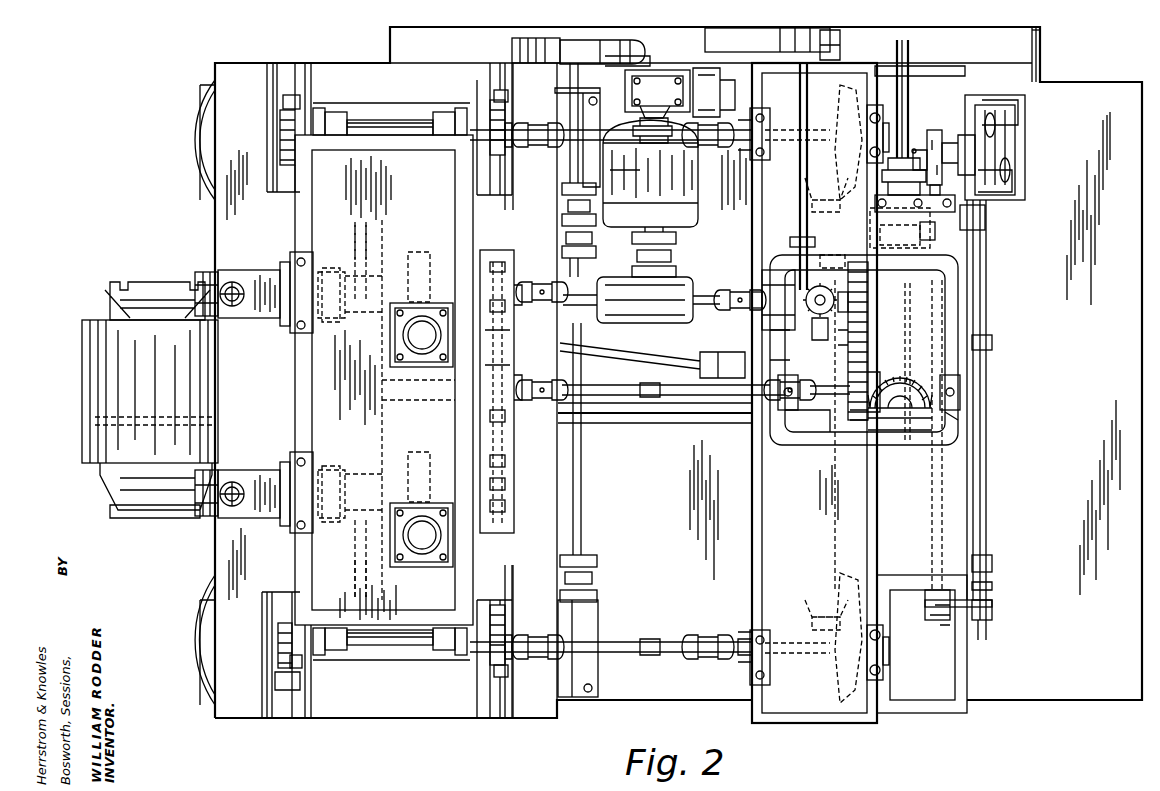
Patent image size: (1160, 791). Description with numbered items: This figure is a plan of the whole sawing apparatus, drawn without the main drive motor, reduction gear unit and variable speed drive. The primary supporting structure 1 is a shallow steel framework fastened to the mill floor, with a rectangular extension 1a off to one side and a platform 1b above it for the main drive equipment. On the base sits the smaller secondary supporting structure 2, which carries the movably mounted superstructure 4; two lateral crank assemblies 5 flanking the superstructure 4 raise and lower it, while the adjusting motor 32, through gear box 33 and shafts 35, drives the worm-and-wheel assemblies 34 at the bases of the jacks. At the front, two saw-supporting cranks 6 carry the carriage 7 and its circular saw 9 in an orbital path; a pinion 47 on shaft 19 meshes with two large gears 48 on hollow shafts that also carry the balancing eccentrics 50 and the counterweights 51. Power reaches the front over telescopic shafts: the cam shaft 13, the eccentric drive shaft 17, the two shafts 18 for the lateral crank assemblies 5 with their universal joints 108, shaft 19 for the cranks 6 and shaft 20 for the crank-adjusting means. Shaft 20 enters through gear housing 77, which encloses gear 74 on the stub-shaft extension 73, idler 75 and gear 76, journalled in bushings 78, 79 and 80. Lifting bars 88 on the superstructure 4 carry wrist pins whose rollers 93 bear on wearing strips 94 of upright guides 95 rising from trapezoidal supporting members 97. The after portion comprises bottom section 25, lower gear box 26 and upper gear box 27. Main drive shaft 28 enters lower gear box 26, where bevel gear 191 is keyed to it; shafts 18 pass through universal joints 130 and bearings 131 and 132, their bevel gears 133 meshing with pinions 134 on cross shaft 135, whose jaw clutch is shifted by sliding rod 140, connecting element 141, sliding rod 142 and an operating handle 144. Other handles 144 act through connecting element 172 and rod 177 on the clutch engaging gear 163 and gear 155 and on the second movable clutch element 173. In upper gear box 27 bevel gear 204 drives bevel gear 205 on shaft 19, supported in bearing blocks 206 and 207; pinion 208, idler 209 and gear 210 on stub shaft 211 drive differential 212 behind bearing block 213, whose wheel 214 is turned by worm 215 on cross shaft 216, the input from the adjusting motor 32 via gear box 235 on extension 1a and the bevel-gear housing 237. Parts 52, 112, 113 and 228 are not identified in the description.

The primary supporting structure 1 is at (200, 88).
The extension 1a is at (390, 40).
The platform 1b is at (1040, 37).
The secondary supporting structure 2 is at (215, 62).
The superstructure 4 is at (480, 243).
The lateral crank assemblies 5 is at (416, 118).
The saw-supporting cranks 6 is at (198, 276).
The carriage 7 is at (92, 322).
The circular saw 9 is at (98, 417).
The cam shaft 13 is at (648, 413).
The eccentric drive shaft 17 is at (628, 352).
The inclined telescopic shafts 18 is at (590, 142).
The shaft 19 is at (530, 390).
The shaft 20 is at (522, 300).
The bottom section 25 is at (967, 705).
The lower gear box 26 is at (877, 723).
The upper gear box 27 is at (958, 440).
The main drive shaft 28 is at (902, 62).
The adjusting motor 32 is at (685, 227).
The gear box 33 is at (622, 277).
The worm-and-wheel assemblies 34 is at (200, 128).
The shafts 35 is at (580, 65).
The pinion 47 is at (380, 390).
The large gears 48 is at (380, 230).
The eccentrics 50 is at (420, 262).
The counterweights 51 is at (334, 322).
The bearing block 52 is at (262, 276).
The extension 73 is at (505, 483).
The gear 74 is at (505, 512).
The idler 75 is at (500, 365).
The gear 76 is at (505, 268).
The gear housing 77 is at (510, 253).
The bushing 78 is at (505, 310).
The bushing 79 is at (505, 416).
The bushing 80 is at (505, 465).
The lifting bars 88 is at (332, 110).
The rollers 93 is at (285, 120).
The wearing strip 94 is at (290, 100).
The upright guide 95 is at (518, 696).
The trapezoidal supporting members 97 is at (288, 185).
The universal joint 108 is at (512, 147).
The shaft section 112 is at (396, 123).
The bearing block 113 is at (345, 115).
The universal joints 130 is at (740, 130).
The bearings 131 is at (770, 112).
The bearings 132 is at (875, 110).
The bevel gear 133 is at (850, 113).
The pinions 134 is at (812, 188).
The cross shaft 135 is at (872, 214).
The sliding rod 140 is at (930, 490).
The connecting element 141 is at (988, 598).
The second sliding rod 142 is at (986, 356).
The operating handles 144 is at (1008, 170).
The gear 155 is at (880, 232).
The gear 163 is at (926, 228).
The connecting element 172 is at (938, 130).
The second movable clutch element 173 is at (940, 180).
The rod 177 is at (975, 290).
The bevel gear 191 is at (886, 368).
The bevel gear 204 is at (900, 440).
The bevel gear 205 is at (958, 396).
The bearing block 206 is at (958, 412).
The bearing block 207 is at (828, 415).
The pinion 208 is at (870, 438).
The idler 209 is at (858, 336).
The gear 210 is at (858, 284).
The stub shaft 211 is at (860, 300).
The differential 212 is at (832, 282).
The bearing block 213 is at (762, 272).
The wheel 214 is at (814, 332).
The worm 215 is at (806, 290).
The cross shaft 216 is at (803, 95).
The coupling 228 is at (752, 312).
The gear box 235 is at (600, 55).
The housing 237 is at (840, 42).